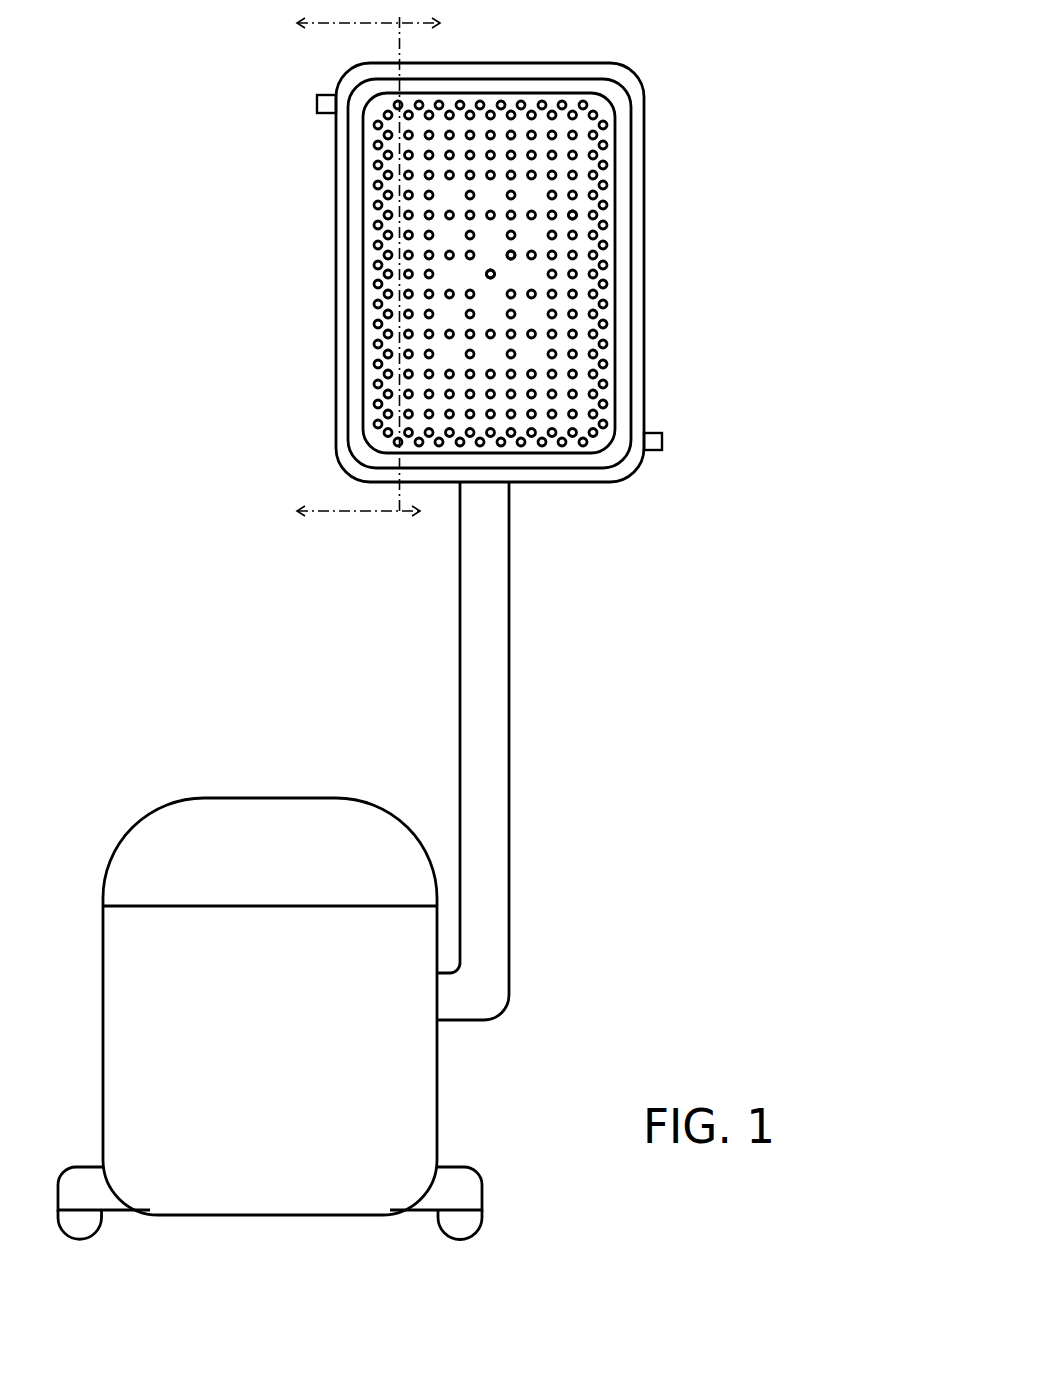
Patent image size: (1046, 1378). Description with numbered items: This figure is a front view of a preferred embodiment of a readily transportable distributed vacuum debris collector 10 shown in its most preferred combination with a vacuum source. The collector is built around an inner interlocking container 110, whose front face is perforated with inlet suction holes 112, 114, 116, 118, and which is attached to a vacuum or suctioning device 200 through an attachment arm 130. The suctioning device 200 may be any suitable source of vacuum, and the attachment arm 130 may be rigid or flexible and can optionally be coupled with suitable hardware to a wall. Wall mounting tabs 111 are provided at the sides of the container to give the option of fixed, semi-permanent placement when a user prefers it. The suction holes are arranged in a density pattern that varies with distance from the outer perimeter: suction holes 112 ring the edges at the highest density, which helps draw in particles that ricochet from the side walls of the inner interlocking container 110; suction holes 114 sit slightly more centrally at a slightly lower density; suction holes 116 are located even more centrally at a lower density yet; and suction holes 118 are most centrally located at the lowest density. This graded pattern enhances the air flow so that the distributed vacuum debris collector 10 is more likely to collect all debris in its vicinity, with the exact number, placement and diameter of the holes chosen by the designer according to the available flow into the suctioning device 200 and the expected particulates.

The distributed vacuum debris collector 10 is at (760, 62).
The inner interlocking container 110 is at (644, 362).
The wall mounting tabs 111 is at (317, 102).
The suction holes 112 is at (603, 145).
The suction holes 114 is at (575, 212).
The suction holes 116 is at (513, 257).
The suction holes 118 is at (494, 276).
The attachment arm 130 is at (498, 643).
The suctioning device 200 is at (300, 980).